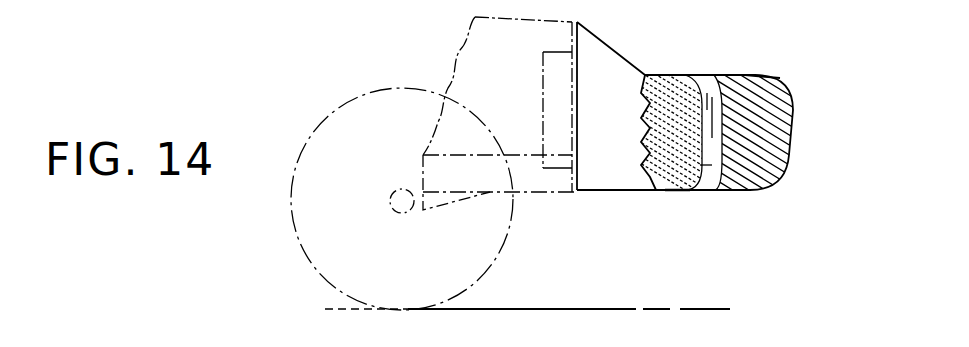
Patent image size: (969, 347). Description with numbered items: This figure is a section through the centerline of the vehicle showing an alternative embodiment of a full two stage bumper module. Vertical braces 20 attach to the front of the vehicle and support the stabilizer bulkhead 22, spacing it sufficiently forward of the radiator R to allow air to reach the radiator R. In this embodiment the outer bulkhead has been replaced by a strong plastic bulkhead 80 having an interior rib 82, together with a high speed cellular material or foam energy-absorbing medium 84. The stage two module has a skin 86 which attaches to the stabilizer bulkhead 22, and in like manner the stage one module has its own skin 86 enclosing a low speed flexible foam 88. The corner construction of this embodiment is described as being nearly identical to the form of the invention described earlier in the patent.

The vertical brace 20 is at (602, 152).
The stabilizer bulkhead 22 is at (648, 152).
The plastic bulkhead 80 is at (717, 80).
The interior rib 82 is at (707, 165).
The energy-absorbing medium 84 is at (676, 190).
The skin 86 is at (683, 78).
The low speed flexible foam 88 is at (793, 120).
The radiator R is at (543, 78).